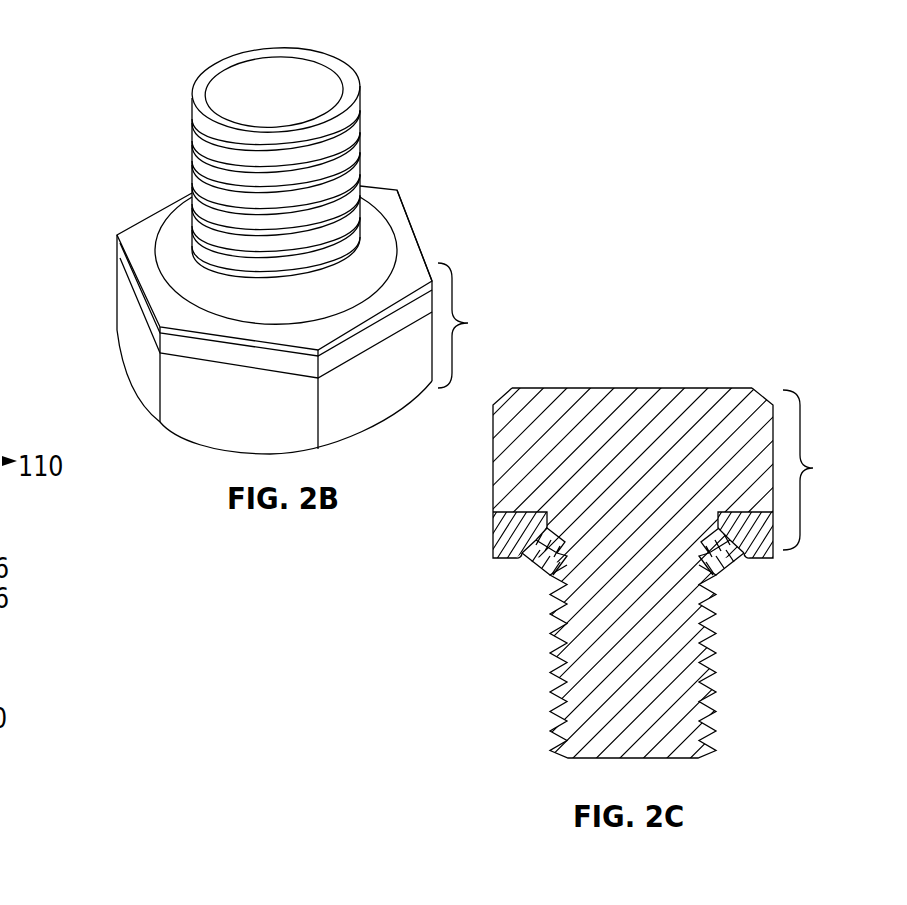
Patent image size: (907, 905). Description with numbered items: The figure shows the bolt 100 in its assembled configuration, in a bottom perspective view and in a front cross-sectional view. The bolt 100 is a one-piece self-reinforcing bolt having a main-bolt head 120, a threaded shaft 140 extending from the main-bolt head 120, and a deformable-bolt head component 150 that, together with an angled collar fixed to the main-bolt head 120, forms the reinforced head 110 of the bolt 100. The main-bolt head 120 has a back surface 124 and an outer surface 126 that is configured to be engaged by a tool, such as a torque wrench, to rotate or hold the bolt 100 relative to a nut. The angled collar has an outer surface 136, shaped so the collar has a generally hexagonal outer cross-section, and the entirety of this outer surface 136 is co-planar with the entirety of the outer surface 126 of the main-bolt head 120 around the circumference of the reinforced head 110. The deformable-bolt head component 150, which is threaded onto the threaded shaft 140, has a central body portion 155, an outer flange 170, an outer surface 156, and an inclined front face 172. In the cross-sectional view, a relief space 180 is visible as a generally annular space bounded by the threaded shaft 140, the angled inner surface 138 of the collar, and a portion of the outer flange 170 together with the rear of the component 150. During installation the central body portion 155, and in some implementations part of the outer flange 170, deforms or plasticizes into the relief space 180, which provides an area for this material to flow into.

In FIG. 2B, the bolt 100 is at (119, 112).
In FIG. 2B, the reinforced head 110 is at (279, 343).
In FIG. 2C, the reinforced head 110 is at (647, 533).
In FIG. 2B, the main-bolt head 120 is at (217, 453).
In FIG. 2C, the main-bolt head 120 is at (643, 387).
In FIG. 2C, the opposing back surface 124 is at (592, 387).
In FIG. 2B, the outer surface 126 is at (254, 417).
In FIG. 2B, the outer surface 136 is at (211, 352).
In FIG. 2C, the angled inner surface 138 is at (519, 550).
In FIG. 2B, the threaded shaft 140 is at (377, 110).
In FIG. 2C, the threaded shaft 140 is at (565, 708).
In FIG. 2B, the deformable-bolt head component 150 is at (389, 206).
In FIG. 2B, the central body portion 155 is at (190, 277).
In FIG. 2C, the central body portion 155 is at (521, 561).
In FIG. 2B, the outer surface 156 is at (181, 333).
In FIG. 2B, the outer flange 170 is at (146, 226).
In FIG. 2B, the inclined front face 172 is at (384, 249).
In FIG. 2C, the inclined front face 172 is at (534, 590).
In FIG. 2C, the relief space 180 is at (533, 511).